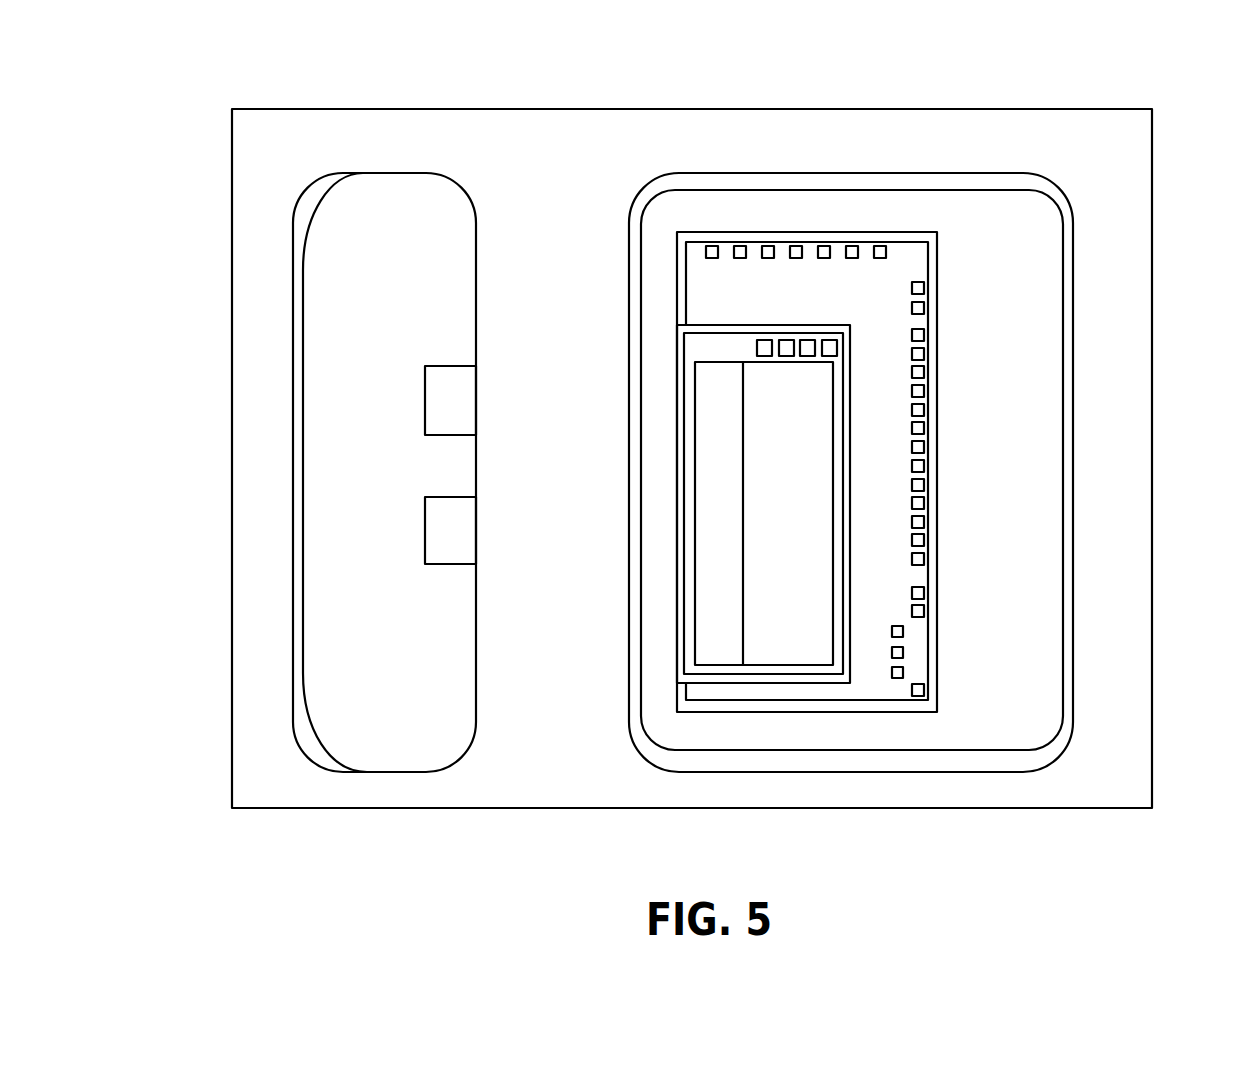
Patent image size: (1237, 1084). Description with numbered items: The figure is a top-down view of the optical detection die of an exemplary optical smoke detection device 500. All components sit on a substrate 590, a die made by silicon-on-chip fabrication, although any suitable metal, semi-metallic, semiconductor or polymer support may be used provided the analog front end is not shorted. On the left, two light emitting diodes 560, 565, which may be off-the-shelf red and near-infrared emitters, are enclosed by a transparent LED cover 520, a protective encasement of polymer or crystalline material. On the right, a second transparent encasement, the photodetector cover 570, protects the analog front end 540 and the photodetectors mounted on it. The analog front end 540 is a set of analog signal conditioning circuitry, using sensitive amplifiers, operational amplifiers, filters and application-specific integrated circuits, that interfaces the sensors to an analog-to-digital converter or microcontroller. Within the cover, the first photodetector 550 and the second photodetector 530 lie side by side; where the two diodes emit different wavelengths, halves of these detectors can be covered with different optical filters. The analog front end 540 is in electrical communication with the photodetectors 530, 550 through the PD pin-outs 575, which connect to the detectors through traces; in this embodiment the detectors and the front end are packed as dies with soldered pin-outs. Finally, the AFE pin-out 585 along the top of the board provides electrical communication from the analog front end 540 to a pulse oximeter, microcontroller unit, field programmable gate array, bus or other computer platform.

The optical smoke detection device 500 is at (892, 858).
The LED cover 520 is at (438, 170).
The photodetector (PD2) 530 is at (850, 568).
The analog front end (AFE) 540 is at (940, 261).
The photodetector (PD1) 550 is at (748, 635).
The light emitting diode 560 is at (422, 395).
The light emitting diode 565 is at (422, 525).
The photodetector cover 570 is at (1065, 391).
The PD pin-out 575 is at (770, 335).
The AFE pin-out 585 is at (743, 231).
The substrate 590 is at (507, 810).